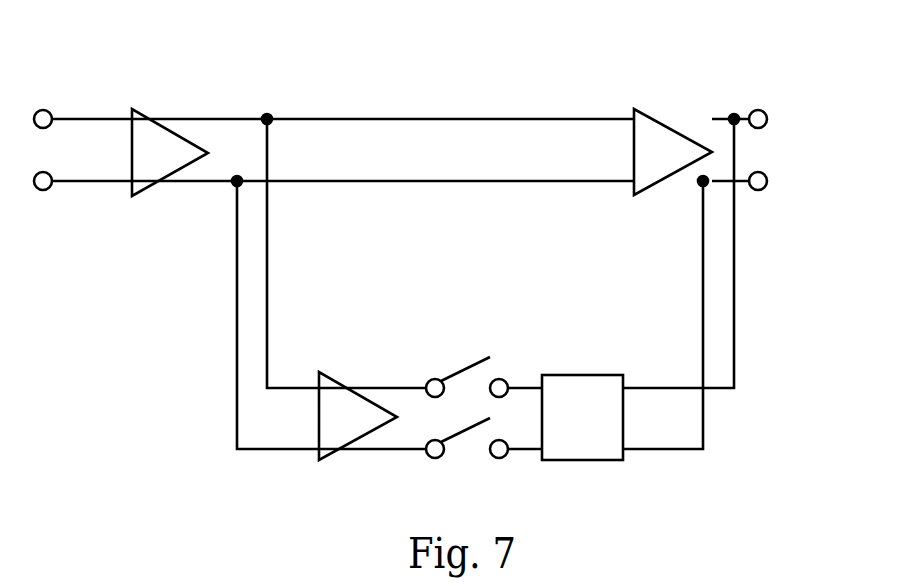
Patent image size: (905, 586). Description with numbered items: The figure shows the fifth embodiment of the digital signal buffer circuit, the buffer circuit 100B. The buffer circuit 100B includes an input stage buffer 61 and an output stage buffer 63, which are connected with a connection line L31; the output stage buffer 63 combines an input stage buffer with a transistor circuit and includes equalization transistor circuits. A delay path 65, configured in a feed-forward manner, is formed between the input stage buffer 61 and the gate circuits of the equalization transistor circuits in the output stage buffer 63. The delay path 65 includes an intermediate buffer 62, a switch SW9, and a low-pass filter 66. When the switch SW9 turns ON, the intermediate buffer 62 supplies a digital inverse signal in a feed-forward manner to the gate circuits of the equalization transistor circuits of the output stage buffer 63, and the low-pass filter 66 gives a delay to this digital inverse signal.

The buffer circuit 100B is at (489, 116).
The connection line L31 is at (342, 119).
The input stage buffer 61 is at (142, 112).
The intermediate buffer 62 is at (340, 374).
The output stage buffer 63 is at (642, 110).
The delay path 65 is at (269, 281).
The low-pass filter 66 is at (583, 375).
The switch SW9 is at (484, 428).